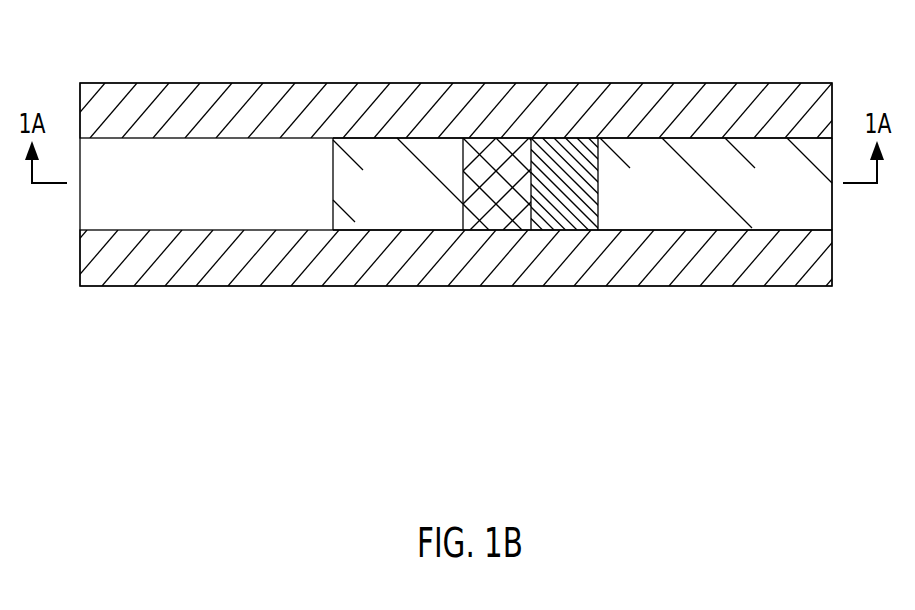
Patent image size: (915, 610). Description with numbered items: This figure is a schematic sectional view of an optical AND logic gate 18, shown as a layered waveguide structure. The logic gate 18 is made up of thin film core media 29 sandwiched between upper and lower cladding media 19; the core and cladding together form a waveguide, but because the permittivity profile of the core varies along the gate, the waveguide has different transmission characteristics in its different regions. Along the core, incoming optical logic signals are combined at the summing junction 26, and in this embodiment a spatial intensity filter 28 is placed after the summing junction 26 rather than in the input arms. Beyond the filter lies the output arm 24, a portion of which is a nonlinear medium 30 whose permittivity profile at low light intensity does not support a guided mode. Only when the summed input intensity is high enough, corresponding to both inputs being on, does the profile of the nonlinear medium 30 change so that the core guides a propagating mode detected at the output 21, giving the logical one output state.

The logic gate 18 is at (847, 268).
The cladding media 19 is at (108, 108).
The output 21 is at (833, 162).
The output arm 24 is at (675, 232).
The summing junction 26 is at (395, 232).
The spatial intensity filter 28 is at (490, 232).
The thin film core media 29 is at (437, 162).
The nonlinear medium 30 is at (565, 232).